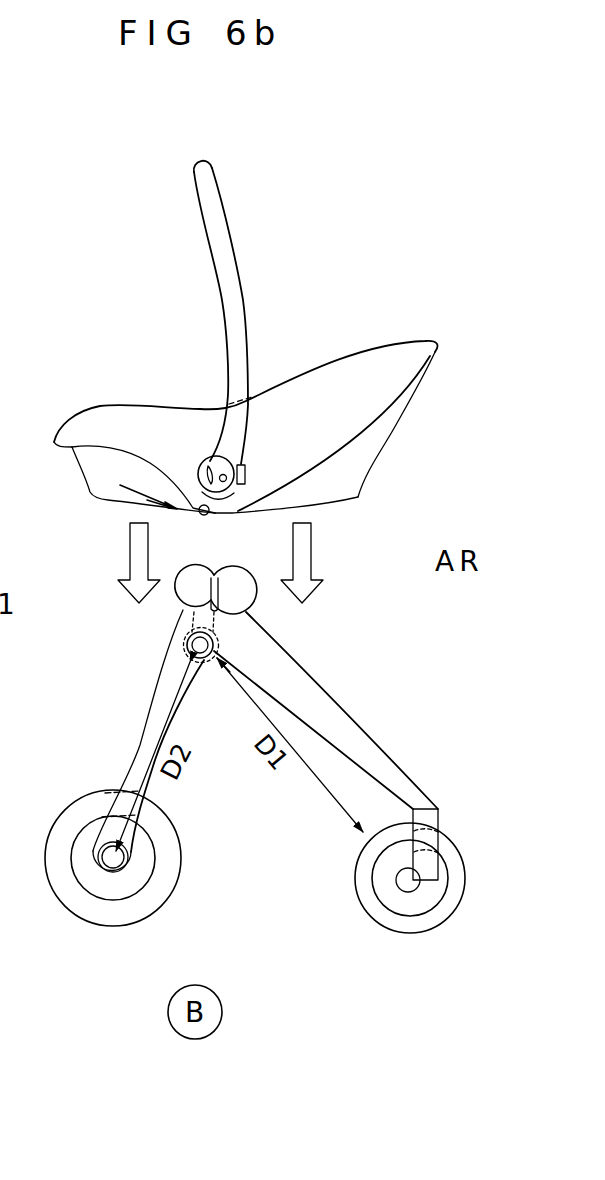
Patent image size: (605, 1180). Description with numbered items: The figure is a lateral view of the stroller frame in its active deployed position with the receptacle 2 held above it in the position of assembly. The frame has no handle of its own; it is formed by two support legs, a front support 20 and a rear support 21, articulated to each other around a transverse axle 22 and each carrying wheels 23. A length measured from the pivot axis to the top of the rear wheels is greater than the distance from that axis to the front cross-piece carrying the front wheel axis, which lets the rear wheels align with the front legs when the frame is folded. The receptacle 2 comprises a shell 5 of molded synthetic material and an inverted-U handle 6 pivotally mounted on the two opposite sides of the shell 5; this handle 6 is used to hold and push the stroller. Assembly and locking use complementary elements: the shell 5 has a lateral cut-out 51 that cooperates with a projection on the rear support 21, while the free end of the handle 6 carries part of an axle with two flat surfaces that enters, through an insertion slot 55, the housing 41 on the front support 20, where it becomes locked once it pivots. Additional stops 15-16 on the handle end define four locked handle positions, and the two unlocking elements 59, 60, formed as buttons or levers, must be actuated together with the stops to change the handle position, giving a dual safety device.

The receptacle 2 is at (370, 291).
The shell 5 is at (364, 428).
The handle 6 is at (228, 268).
The additional stops 15-16 is at (207, 459).
The front support 20 is at (146, 737).
The rear support 21 is at (365, 748).
The transverse axle 22 is at (189, 630).
The wheels 23 is at (166, 898).
The female assembly element 41 is at (228, 584).
The cut-out 51 is at (198, 513).
The insertion slot 55 is at (206, 574).
The unlocking element 59 is at (254, 465).
The unlocking element 60 is at (199, 463).